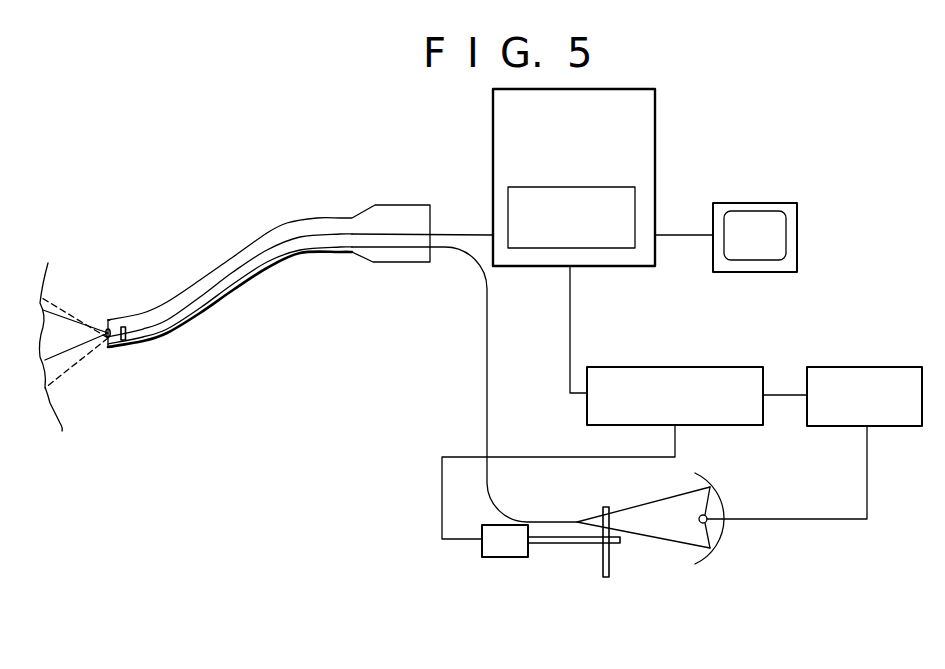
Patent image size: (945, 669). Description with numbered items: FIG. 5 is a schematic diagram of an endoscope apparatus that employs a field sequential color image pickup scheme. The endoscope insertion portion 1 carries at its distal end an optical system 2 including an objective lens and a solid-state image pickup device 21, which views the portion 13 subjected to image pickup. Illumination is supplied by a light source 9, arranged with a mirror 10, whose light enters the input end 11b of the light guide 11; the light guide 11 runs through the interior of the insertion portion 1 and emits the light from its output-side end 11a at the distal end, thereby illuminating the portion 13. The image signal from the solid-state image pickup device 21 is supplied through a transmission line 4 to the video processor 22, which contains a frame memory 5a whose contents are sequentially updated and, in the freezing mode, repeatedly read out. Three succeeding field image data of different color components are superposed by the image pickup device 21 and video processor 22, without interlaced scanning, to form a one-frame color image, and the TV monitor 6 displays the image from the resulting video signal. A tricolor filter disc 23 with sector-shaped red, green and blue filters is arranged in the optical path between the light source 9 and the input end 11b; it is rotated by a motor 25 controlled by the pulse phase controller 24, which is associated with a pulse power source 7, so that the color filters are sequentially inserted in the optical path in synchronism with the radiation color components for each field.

The endoscope insertion portion 1 is at (247, 237).
The optical system 2 is at (106, 331).
The transmission line 4 is at (197, 304).
The frame memory 5a is at (605, 187).
The TV monitor 6 is at (751, 203).
The pulse power source 7 is at (861, 367).
The light source 9 is at (699, 519).
The mirror 10 is at (700, 556).
The light guide 11 is at (487, 397).
The light guide exit end 11a is at (109, 350).
The input end of light guide 11b is at (575, 520).
The portion subjected to image pickup 13 is at (62, 428).
The solid-state image pickup device 21 is at (123, 326).
The video processor 22 is at (635, 89).
The tricolor filter disc 23 is at (607, 578).
The pulse phase controller 24 is at (662, 367).
The motor 25 is at (493, 558).